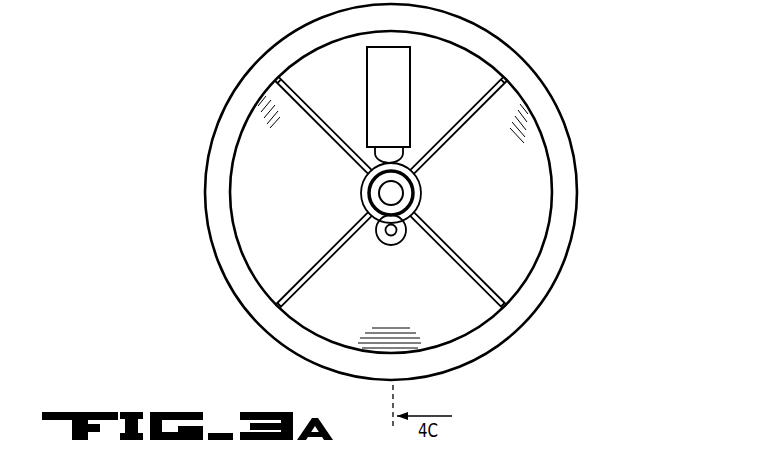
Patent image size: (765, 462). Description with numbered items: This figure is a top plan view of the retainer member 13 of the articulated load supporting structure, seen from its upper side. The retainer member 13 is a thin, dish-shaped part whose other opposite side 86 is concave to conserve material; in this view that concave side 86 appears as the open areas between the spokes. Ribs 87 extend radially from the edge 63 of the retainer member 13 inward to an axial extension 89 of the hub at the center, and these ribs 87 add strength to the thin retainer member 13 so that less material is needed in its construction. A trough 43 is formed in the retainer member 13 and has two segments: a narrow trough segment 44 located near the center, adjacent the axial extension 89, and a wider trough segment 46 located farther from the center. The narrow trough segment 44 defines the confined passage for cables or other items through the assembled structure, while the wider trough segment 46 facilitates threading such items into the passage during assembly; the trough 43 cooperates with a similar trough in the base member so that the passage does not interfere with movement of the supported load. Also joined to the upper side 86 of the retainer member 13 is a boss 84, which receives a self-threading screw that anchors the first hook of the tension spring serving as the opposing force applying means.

The retainer member 13 is at (419, 192).
The edge 63 is at (557, 108).
The other opposite side 86 is at (279, 194).
The ribs 87 is at (335, 143).
The axial extension 89 is at (360, 197).
The boss 84 is at (391, 246).
The trough 43 is at (447, 86).
The wider trough segment 46 is at (409, 100).
The narrow trough segment 44 is at (393, 152).